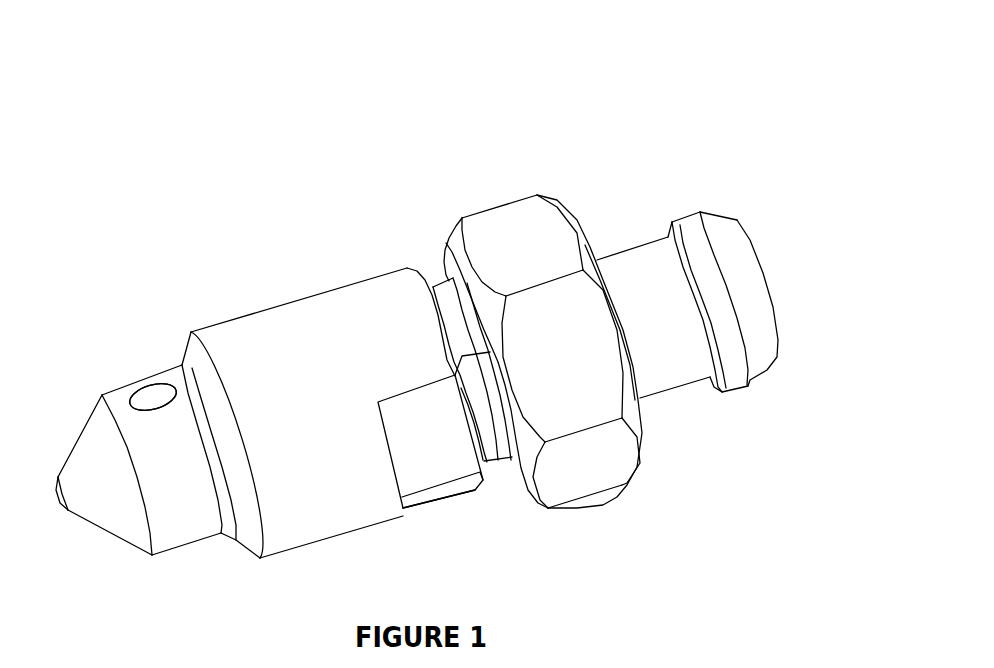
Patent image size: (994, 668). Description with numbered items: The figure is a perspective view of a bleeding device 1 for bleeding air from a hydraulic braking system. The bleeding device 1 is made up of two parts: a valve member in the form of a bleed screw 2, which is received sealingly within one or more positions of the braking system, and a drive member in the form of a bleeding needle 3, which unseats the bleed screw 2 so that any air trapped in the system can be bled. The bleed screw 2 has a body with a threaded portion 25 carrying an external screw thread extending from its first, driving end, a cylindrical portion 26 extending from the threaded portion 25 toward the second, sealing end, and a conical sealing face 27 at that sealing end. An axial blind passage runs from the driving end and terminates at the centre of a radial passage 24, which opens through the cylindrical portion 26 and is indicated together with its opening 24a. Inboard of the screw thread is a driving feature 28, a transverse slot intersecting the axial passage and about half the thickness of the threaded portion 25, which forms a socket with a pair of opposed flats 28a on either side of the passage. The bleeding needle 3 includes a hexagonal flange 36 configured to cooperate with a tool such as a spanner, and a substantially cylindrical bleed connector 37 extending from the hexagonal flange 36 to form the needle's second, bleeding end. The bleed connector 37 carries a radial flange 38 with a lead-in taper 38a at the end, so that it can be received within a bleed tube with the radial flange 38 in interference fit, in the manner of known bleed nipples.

The bleeding device 1 is at (722, 100).
The bleed screw 2 is at (203, 257).
The bleeding needle 3 is at (711, 534).
The radial passage 24 is at (150, 392).
The orifice 24a is at (153, 397).
The threaded portion 25 is at (330, 438).
The cylindrical portion 26 is at (193, 493).
The conical sealing face 27 is at (125, 501).
The driving feature 28 is at (418, 387).
The opposed flats 28a is at (435, 495).
The hexagonal flange 36 is at (582, 365).
The bleed connector 37 is at (646, 265).
The radial flange 38 is at (727, 388).
The lead-in taper 38a is at (765, 370).